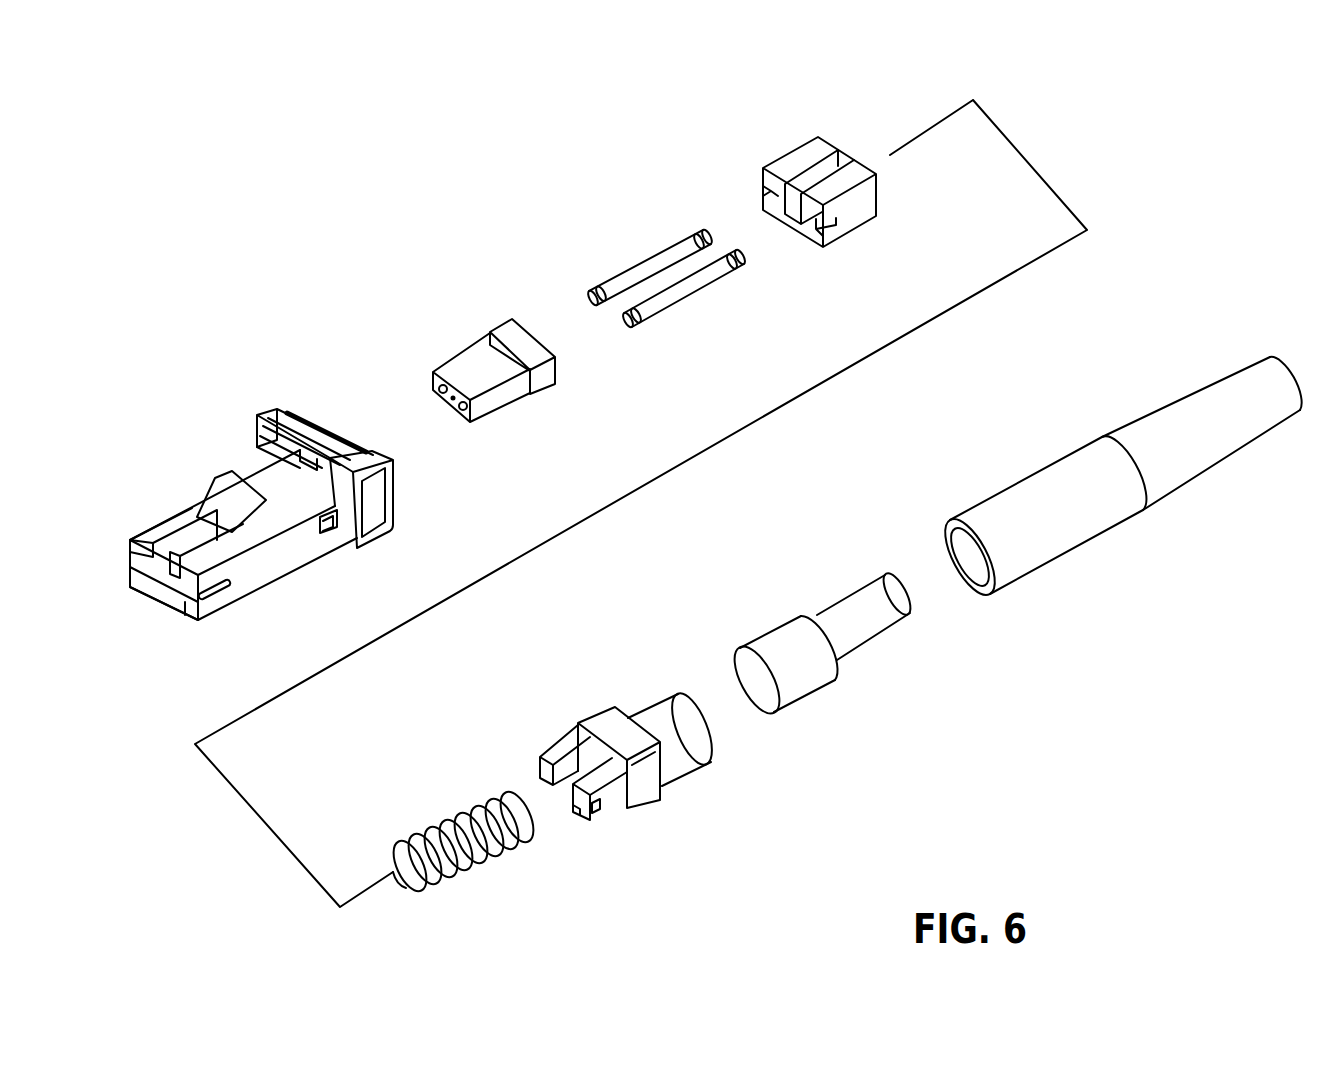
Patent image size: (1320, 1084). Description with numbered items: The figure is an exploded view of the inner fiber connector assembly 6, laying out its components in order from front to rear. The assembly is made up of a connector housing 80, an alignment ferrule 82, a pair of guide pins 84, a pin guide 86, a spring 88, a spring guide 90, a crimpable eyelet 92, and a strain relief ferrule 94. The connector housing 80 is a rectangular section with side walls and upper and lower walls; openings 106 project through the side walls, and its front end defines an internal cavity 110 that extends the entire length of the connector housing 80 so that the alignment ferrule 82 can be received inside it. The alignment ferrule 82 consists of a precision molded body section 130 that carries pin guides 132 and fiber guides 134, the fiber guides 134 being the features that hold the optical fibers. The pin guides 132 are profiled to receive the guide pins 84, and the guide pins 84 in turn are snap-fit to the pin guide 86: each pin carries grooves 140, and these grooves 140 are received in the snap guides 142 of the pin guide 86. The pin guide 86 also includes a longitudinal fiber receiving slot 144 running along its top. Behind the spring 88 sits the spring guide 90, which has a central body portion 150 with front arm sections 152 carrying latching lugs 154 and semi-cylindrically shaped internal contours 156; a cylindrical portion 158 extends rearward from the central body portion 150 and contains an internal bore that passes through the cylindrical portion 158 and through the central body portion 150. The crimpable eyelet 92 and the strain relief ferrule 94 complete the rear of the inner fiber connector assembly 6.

The connector housing 80 is at (240, 506).
The alignment ferrule 82 is at (445, 379).
The guide pins 84 is at (669, 261).
The pin guide 86 is at (790, 163).
The spring 88 is at (445, 820).
The spring guide 90 is at (637, 755).
The crimpable eyelet 92 is at (785, 645).
The strain relief ferrule 94 is at (1165, 437).
The openings 106 is at (328, 540).
The internal cavity 110 is at (165, 598).
The body section 130 is at (507, 400).
The pin guides 132 is at (440, 389).
The fiber guides 134 is at (456, 401).
The grooves 140 is at (707, 232).
The snap guides 142 is at (805, 153).
The longitudinal fiber receiving slot 144 is at (838, 160).
The central body portion 150 is at (645, 778).
The front arm sections 152 is at (615, 797).
The latching lugs 154 is at (593, 822).
The internal contours 156 is at (570, 767).
The cylindrical portion 158 is at (690, 755).
The inner fiber connector assembly 6 is at (1194, 653).